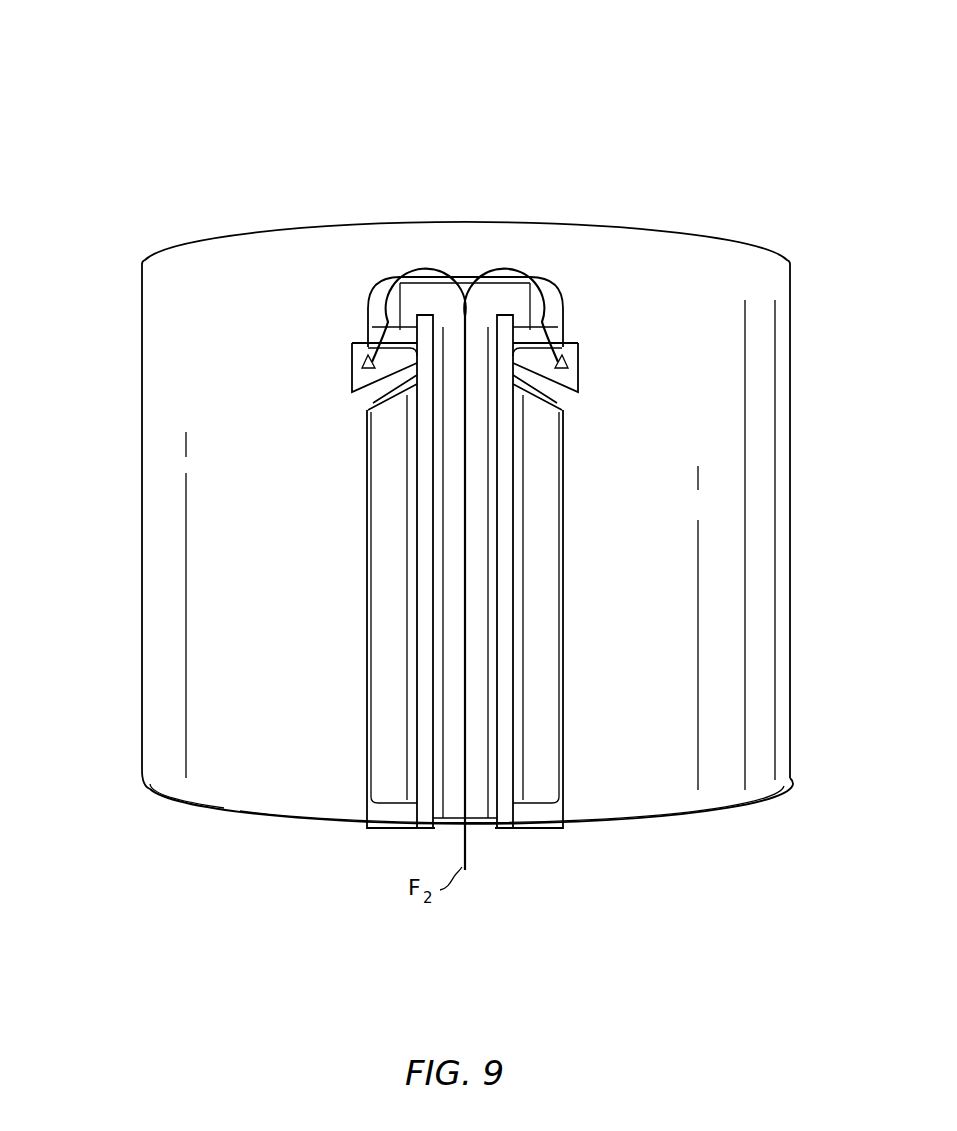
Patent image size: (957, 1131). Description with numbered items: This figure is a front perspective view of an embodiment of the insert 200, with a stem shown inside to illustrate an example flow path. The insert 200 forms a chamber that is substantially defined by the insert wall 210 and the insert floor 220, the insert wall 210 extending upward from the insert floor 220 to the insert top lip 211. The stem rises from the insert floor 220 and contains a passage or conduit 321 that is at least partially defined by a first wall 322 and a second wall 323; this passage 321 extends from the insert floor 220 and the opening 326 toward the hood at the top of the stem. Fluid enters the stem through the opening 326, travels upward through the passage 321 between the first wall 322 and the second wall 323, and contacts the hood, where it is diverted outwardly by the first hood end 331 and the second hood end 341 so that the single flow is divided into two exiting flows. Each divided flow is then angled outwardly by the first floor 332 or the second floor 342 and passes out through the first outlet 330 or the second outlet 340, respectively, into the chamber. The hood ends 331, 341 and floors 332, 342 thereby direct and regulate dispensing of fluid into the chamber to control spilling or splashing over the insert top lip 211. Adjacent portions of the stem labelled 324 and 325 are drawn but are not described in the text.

The insert 200 is at (111, 103).
The insert wall 210 is at (783, 358).
The insert top lip 211 is at (694, 221).
The insert floor 220 is at (706, 823).
The passage 321 is at (438, 779).
The first wall 322 is at (508, 681).
The second wall 323 is at (419, 645).
The right outer sleeve 324 is at (552, 612).
The left outer sleeve 325 is at (377, 597).
The opening 326 is at (499, 856).
The first outlet 330 is at (593, 375).
The first hood end 331 is at (527, 274).
The first floor 332 is at (562, 410).
The second outlet 340 is at (337, 375).
The second hood end 341 is at (393, 263).
The second floor 342 is at (368, 410).